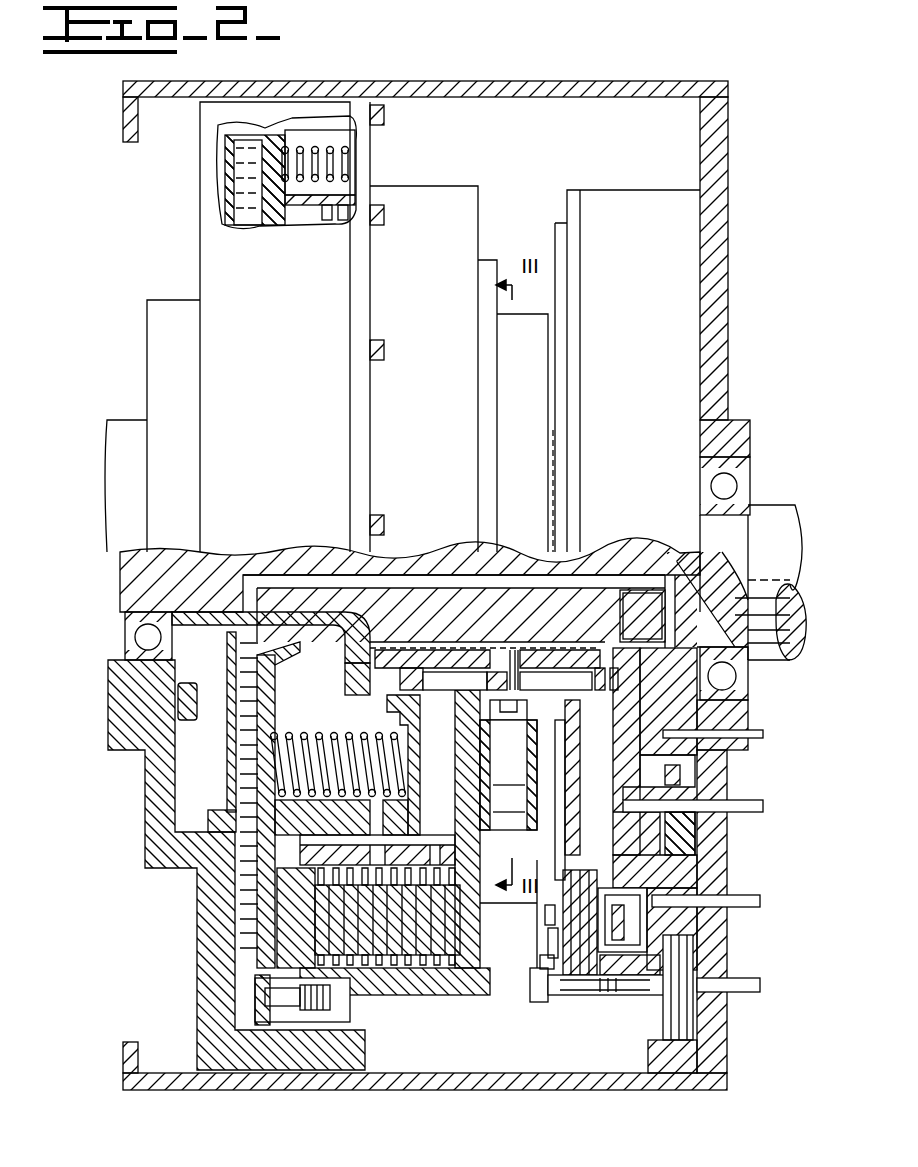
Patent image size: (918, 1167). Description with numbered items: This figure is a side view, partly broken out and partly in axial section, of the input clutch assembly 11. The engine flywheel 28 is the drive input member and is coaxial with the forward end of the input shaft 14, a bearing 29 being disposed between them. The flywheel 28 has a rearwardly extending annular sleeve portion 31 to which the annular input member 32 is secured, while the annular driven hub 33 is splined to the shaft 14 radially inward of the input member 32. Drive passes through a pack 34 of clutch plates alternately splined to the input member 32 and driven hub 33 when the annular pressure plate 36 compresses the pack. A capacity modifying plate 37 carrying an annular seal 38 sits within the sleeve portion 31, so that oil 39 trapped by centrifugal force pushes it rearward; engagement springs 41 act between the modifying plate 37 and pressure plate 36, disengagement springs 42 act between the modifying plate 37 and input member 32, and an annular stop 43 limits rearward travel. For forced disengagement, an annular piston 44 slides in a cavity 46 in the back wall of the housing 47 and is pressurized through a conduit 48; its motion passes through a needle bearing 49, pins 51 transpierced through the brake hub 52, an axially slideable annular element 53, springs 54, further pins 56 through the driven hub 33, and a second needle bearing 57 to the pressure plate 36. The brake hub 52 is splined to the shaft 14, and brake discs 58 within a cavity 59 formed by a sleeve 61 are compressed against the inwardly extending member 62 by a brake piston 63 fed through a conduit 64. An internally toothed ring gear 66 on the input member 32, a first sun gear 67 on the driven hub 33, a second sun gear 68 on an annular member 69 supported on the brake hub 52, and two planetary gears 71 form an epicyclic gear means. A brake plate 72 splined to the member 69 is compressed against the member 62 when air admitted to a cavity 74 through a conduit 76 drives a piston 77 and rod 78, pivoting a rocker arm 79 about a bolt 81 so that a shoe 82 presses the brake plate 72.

The input clutch assembly 11 is at (459, 583).
The input shaft 14 is at (771, 508).
The engine flywheel 28 is at (200, 912).
The bearing 29 is at (125, 656).
The annular sleeve portion 31 is at (298, 1073).
The annular input member 32 is at (420, 993).
The annular driven hub 33 is at (462, 776).
The clutch pack 34 is at (310, 903).
The annular pressure plate 36 is at (290, 940).
The capacity modifying plate 37 is at (290, 787).
The annular seal 38 is at (270, 1022).
The oil 39 is at (247, 725).
The engagement springs 41 is at (290, 742).
The disengagement springs 42 is at (335, 163).
The annular stop 43 is at (275, 975).
The annular piston 44 is at (700, 760).
The cavity 46 is at (690, 820).
The housing 47 is at (727, 866).
The conduit 48 is at (770, 806).
The needle bearing 49 is at (605, 660).
The axially slideable pins 51 is at (555, 672).
The brake hub 52 is at (580, 752).
The axially slideable annular element 53 is at (515, 666).
The springs 54 is at (492, 668).
The axially slideable pins 56 is at (450, 678).
The needle bearing 57 is at (400, 680).
The brake discs 58 is at (624, 920).
The cavity 59 is at (598, 995).
The sleeve 61 is at (548, 1002).
The annular inwardly extending member 62 is at (622, 920).
The brake piston 63 is at (620, 885).
The conduit 64 is at (768, 906).
The ring gear 66 is at (509, 804).
The first sun gear 67 is at (495, 720).
The second sun gear 68 is at (508, 775).
The annular member 69 is at (604, 692).
The planetary gears 71 is at (509, 776).
The brake plate 72 is at (565, 786).
The cavity 74 is at (693, 1020).
The conduit 76 is at (768, 985).
The piston 77 is at (690, 1045).
The rod 78 is at (645, 995).
The rocker arm 79 is at (548, 935).
The bolt 81 is at (525, 965).
The shoe 82 is at (545, 908).